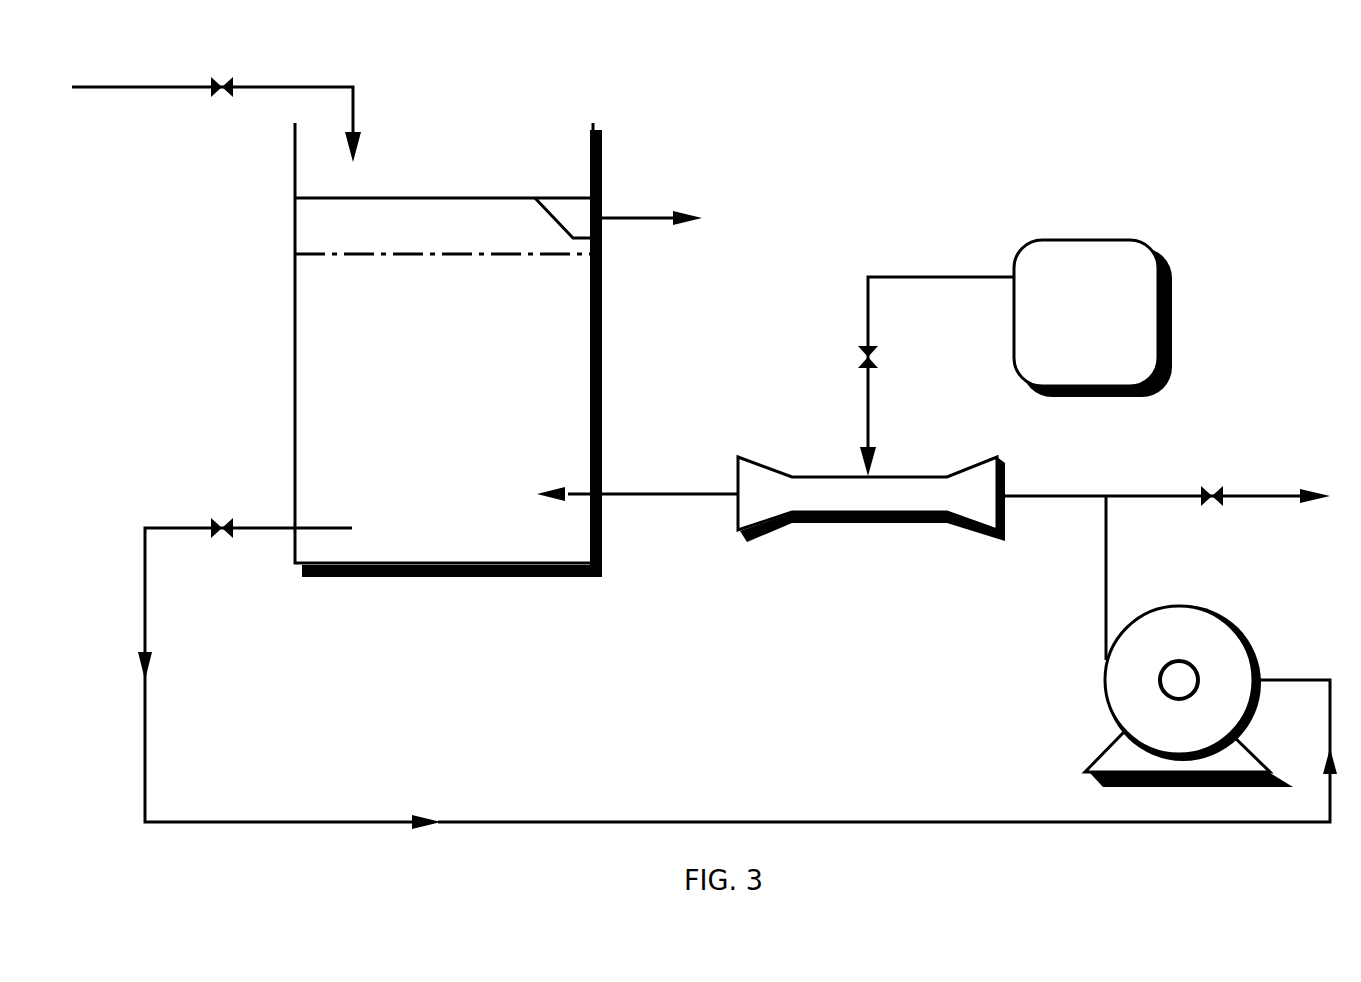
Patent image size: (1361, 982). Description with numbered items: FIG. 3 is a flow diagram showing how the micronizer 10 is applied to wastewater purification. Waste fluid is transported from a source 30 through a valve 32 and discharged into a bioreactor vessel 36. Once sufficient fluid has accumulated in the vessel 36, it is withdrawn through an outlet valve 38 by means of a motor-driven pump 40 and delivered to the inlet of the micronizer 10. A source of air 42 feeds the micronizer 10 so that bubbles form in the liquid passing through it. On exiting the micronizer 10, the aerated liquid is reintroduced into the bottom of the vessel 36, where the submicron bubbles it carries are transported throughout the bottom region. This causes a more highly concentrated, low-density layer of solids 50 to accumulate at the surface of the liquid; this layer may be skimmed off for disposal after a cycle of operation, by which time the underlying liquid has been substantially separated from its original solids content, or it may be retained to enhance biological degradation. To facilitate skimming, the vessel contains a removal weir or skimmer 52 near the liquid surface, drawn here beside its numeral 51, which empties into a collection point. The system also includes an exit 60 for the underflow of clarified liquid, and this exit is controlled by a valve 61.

The source 30 is at (101, 86).
The valve 32 is at (232, 82).
The bioreactor vessel 36 is at (294, 320).
The layer of solids 50 is at (460, 223).
The overflow weir 51 is at (578, 212).
The removal weir or skimmer 52 is at (652, 217).
The outlet valve 38 is at (220, 520).
The micronizer 10 is at (862, 518).
The source of air 42 is at (1125, 239).
The motor-driven pump 40 is at (1106, 700).
The valve 61 is at (1212, 492).
The exit 60 is at (1285, 494).